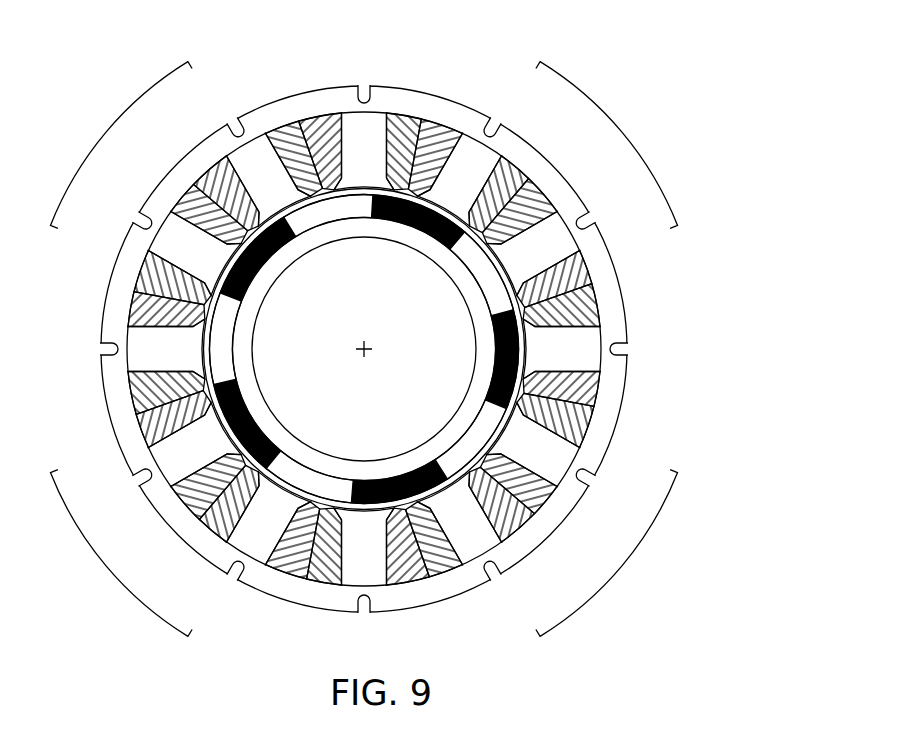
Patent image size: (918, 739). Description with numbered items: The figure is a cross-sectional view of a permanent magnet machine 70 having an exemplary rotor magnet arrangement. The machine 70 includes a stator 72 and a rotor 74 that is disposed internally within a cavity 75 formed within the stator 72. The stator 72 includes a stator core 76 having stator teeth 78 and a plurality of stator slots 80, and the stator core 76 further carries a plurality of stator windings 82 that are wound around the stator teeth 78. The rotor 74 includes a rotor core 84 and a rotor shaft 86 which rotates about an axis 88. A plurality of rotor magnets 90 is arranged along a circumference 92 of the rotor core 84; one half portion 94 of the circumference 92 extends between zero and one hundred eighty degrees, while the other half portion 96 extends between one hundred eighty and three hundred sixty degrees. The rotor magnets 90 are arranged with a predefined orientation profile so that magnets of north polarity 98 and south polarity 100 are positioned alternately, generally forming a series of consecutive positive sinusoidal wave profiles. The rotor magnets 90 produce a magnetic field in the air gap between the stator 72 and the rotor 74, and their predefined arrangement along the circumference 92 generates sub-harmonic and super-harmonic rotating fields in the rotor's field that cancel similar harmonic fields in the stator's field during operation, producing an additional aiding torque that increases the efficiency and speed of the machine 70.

The permanent magnet machine 70 is at (401, 327).
The stator 72 is at (379, 354).
The rotor 74 is at (141, 468).
The cavity 75 is at (480, 147).
The stator core 76 is at (565, 181).
The stator teeth 78 is at (538, 447).
The stator slots 80 is at (620, 343).
The stator windings 82 is at (180, 198).
The rotor core 84 is at (312, 462).
The rotor shaft 86 is at (457, 413).
The axis 88 is at (370, 342).
The rotor magnets 90 is at (429, 402).
The circumference 92 is at (457, 460).
The one half portion 94 is at (112, 124).
The other half portion 96 is at (112, 573).
The north polarity 98 is at (262, 422).
The south polarity 100 is at (340, 203).